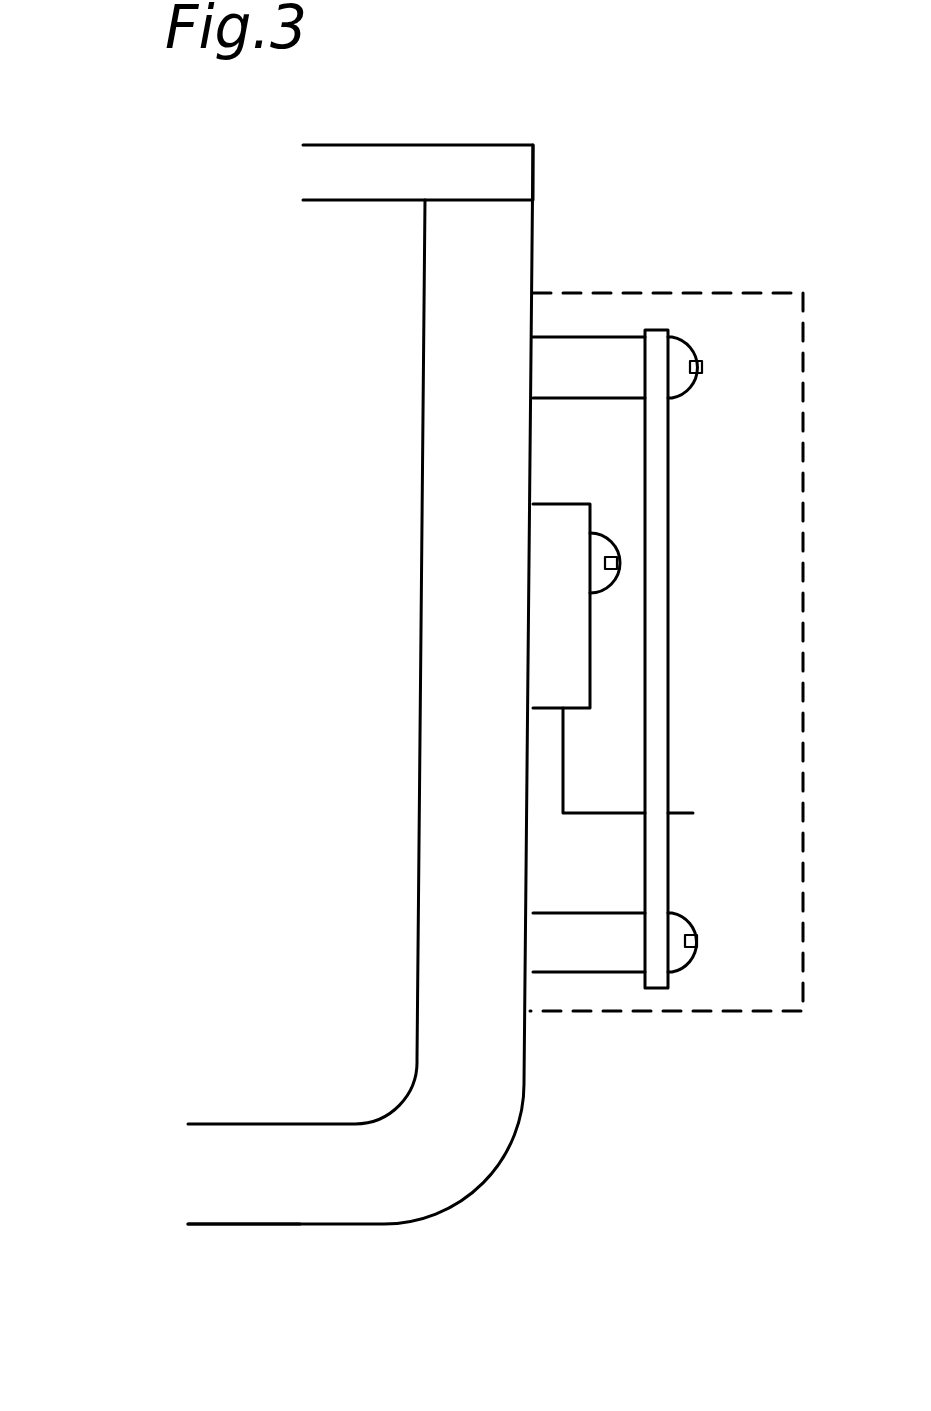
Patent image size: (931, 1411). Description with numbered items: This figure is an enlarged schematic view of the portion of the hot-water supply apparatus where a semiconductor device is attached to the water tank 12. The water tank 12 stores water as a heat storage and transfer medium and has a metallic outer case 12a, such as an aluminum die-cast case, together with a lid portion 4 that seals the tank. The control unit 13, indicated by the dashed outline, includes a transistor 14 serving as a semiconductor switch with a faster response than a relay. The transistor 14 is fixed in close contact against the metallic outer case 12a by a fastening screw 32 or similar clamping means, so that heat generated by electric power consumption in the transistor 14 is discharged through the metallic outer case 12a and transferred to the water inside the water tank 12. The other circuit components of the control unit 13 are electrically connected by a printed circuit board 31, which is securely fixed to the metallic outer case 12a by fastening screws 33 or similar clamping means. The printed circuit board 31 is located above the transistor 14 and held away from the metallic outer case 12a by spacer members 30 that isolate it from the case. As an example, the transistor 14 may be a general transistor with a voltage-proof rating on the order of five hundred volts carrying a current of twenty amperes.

The lid portion 4 is at (434, 145).
The water tank 12 is at (181, 906).
The metallic outer case 12a is at (308, 1226).
The control unit 13 is at (742, 293).
The transistor 14 is at (552, 623).
The spacer member 30 is at (600, 360).
The printed circuit board 31 is at (668, 667).
The fastening screw 32 is at (612, 533).
The fastening screws 33 is at (700, 393).